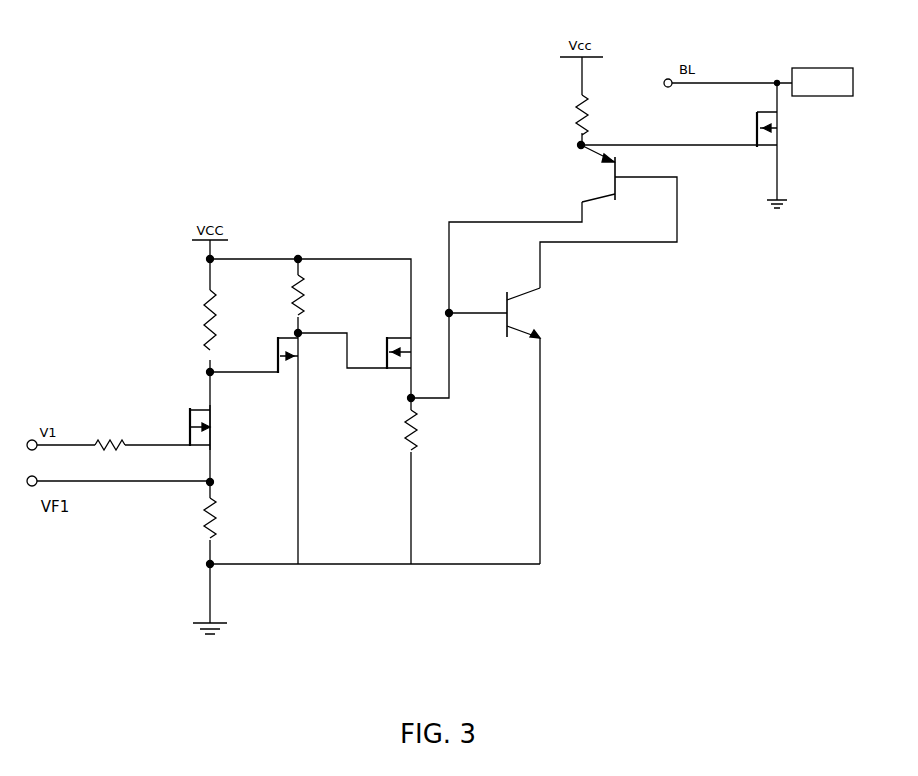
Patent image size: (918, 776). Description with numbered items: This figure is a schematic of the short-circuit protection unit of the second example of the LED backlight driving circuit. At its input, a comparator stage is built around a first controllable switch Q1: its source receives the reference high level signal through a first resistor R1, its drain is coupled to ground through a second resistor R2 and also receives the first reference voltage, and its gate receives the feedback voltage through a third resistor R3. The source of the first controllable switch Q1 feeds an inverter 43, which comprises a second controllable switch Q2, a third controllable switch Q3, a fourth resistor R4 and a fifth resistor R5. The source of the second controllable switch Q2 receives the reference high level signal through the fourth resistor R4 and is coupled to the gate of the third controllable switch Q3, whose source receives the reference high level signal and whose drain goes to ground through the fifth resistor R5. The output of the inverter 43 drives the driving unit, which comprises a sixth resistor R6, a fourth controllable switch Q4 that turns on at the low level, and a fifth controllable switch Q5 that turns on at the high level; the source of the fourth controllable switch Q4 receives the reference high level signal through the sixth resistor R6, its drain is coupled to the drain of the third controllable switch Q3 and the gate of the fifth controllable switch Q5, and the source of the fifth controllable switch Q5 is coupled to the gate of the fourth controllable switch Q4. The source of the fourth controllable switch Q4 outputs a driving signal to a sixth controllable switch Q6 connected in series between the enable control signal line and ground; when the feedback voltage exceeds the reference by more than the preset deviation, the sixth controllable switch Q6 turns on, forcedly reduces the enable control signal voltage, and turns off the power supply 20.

The power supply 20 is at (835, 92).
The inverter 43 is at (348, 313).
The first controllable switch Q1 is at (213, 427).
The second controllable switch Q2 is at (273, 355).
The third controllable switch Q3 is at (386, 353).
The fourth controllable switch Q4 is at (589, 173).
The fifth controllable switch Q5 is at (530, 313).
The sixth controllable switch Q6 is at (751, 129).
The first resistor R1 is at (195, 320).
The second resistor R2 is at (193, 518).
The third resistor R3 is at (110, 434).
The fourth resistor R4 is at (310, 295).
The fifth resistor R5 is at (427, 430).
The sixth resistor R6 is at (567, 115).